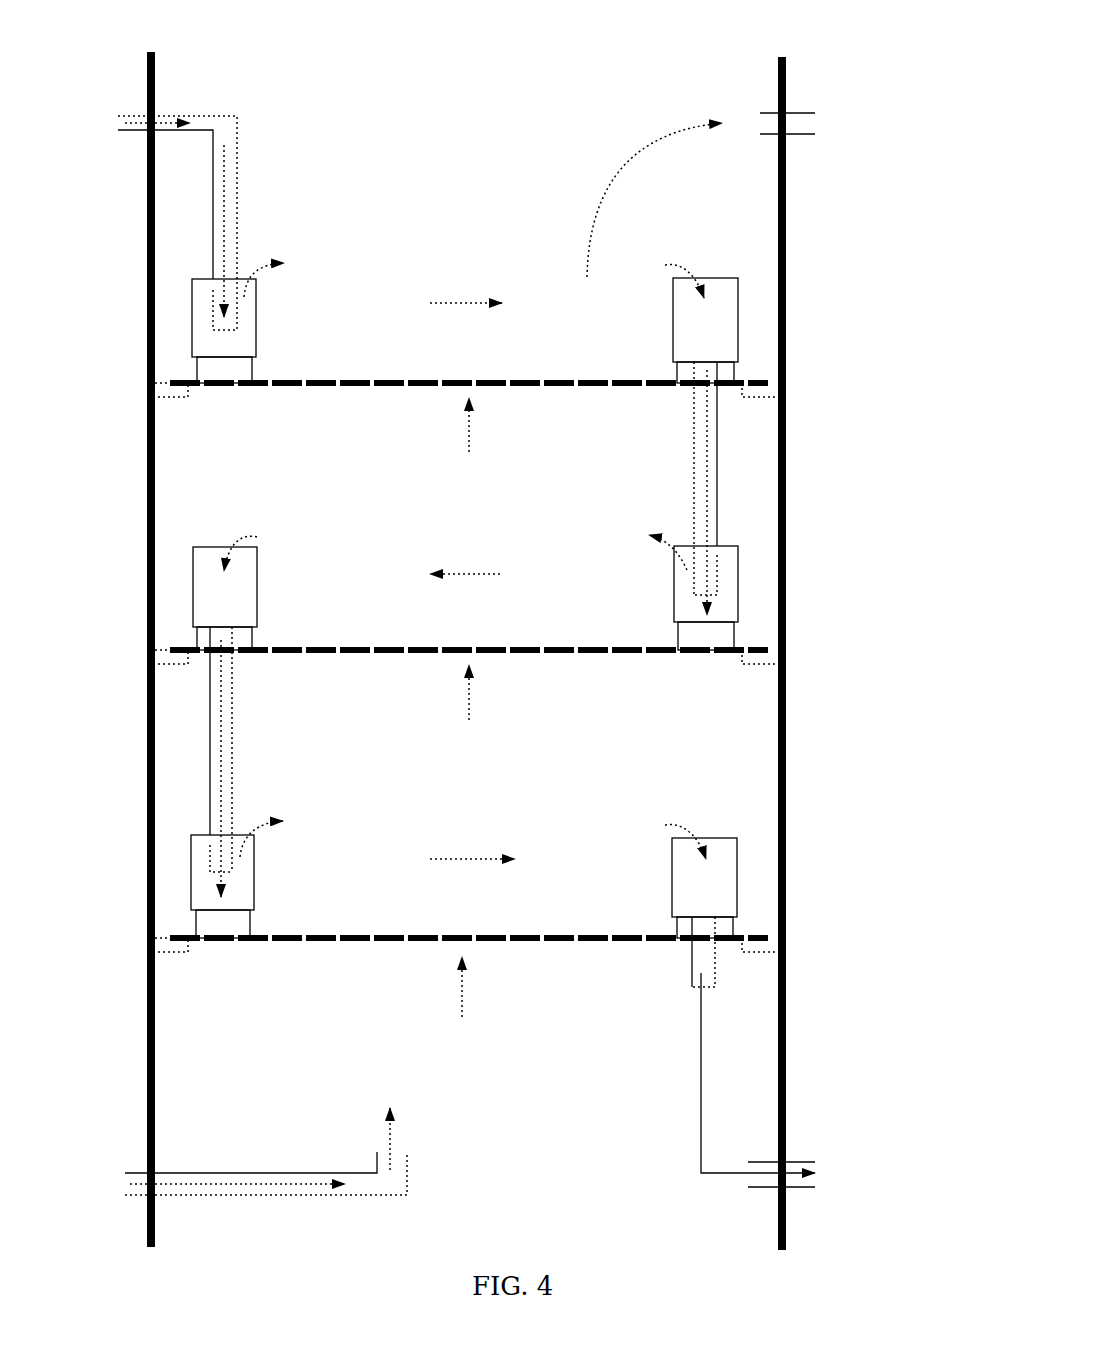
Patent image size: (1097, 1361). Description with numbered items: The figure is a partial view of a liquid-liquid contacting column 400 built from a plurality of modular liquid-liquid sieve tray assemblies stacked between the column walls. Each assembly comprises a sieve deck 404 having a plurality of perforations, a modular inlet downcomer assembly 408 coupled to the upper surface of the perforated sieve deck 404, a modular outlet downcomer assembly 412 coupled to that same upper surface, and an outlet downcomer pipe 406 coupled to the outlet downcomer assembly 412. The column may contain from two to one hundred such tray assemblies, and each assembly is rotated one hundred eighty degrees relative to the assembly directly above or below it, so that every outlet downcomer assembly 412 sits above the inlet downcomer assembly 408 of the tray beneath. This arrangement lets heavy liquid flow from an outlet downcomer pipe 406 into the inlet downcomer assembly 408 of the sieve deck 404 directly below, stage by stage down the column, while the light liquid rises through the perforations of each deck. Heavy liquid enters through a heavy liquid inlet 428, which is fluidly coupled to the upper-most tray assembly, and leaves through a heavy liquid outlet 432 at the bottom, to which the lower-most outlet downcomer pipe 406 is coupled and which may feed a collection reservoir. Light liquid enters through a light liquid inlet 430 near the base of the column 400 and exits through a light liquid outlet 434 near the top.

The liquid-liquid contacting column 400 is at (843, 80).
The sieve deck 404 is at (337, 388).
The outlet downcomer pipe 406 is at (717, 497).
The modular inlet downcomer assembly 408 is at (192, 298).
The modular outlet downcomer assembly 412 is at (738, 345).
The heavy liquid inlet 428 is at (142, 217).
The light liquid inlet 430 is at (231, 1151).
The heavy liquid outlet 432 is at (796, 1080).
The light liquid outlet 434 is at (828, 125).